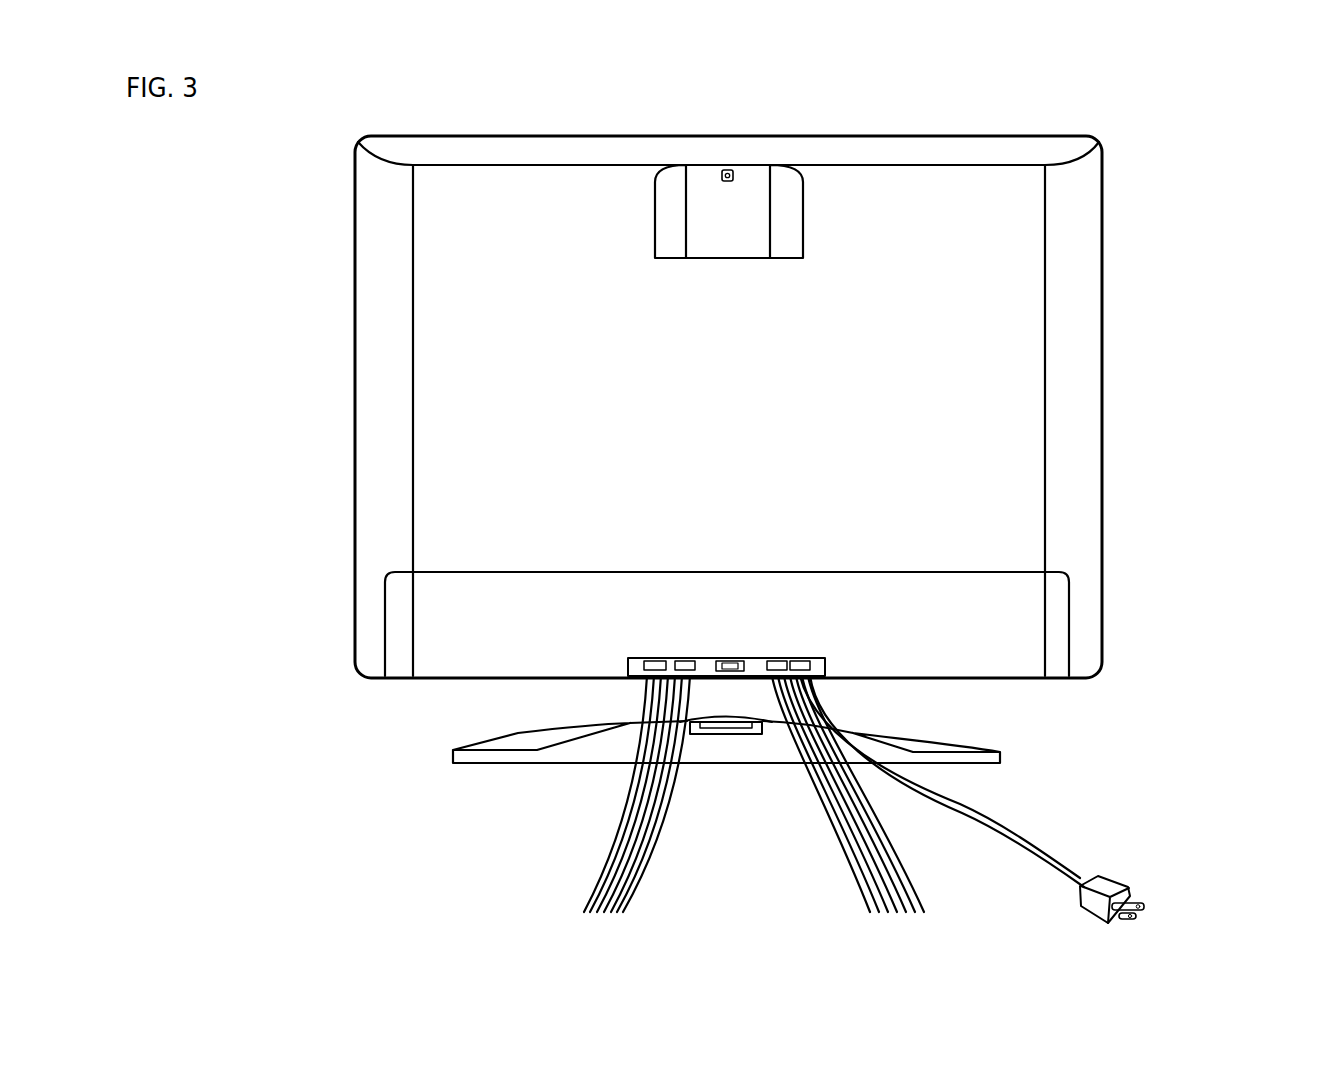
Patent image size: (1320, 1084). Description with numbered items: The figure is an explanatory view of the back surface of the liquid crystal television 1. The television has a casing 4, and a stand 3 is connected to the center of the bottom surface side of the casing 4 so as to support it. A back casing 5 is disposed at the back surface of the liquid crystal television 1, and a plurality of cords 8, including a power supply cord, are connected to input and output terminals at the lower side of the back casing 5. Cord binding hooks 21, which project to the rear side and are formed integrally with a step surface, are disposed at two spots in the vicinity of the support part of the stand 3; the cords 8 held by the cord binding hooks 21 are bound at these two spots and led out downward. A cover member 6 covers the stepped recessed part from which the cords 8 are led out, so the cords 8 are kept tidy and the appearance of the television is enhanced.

The liquid crystal television 1 is at (846, 134).
The stand 3 is at (743, 742).
The casing 4 is at (1104, 200).
The back casing 5 is at (980, 340).
The cover member 6 is at (1003, 621).
The cords 8 is at (865, 890).
The cord binding hooks 21 is at (780, 662).